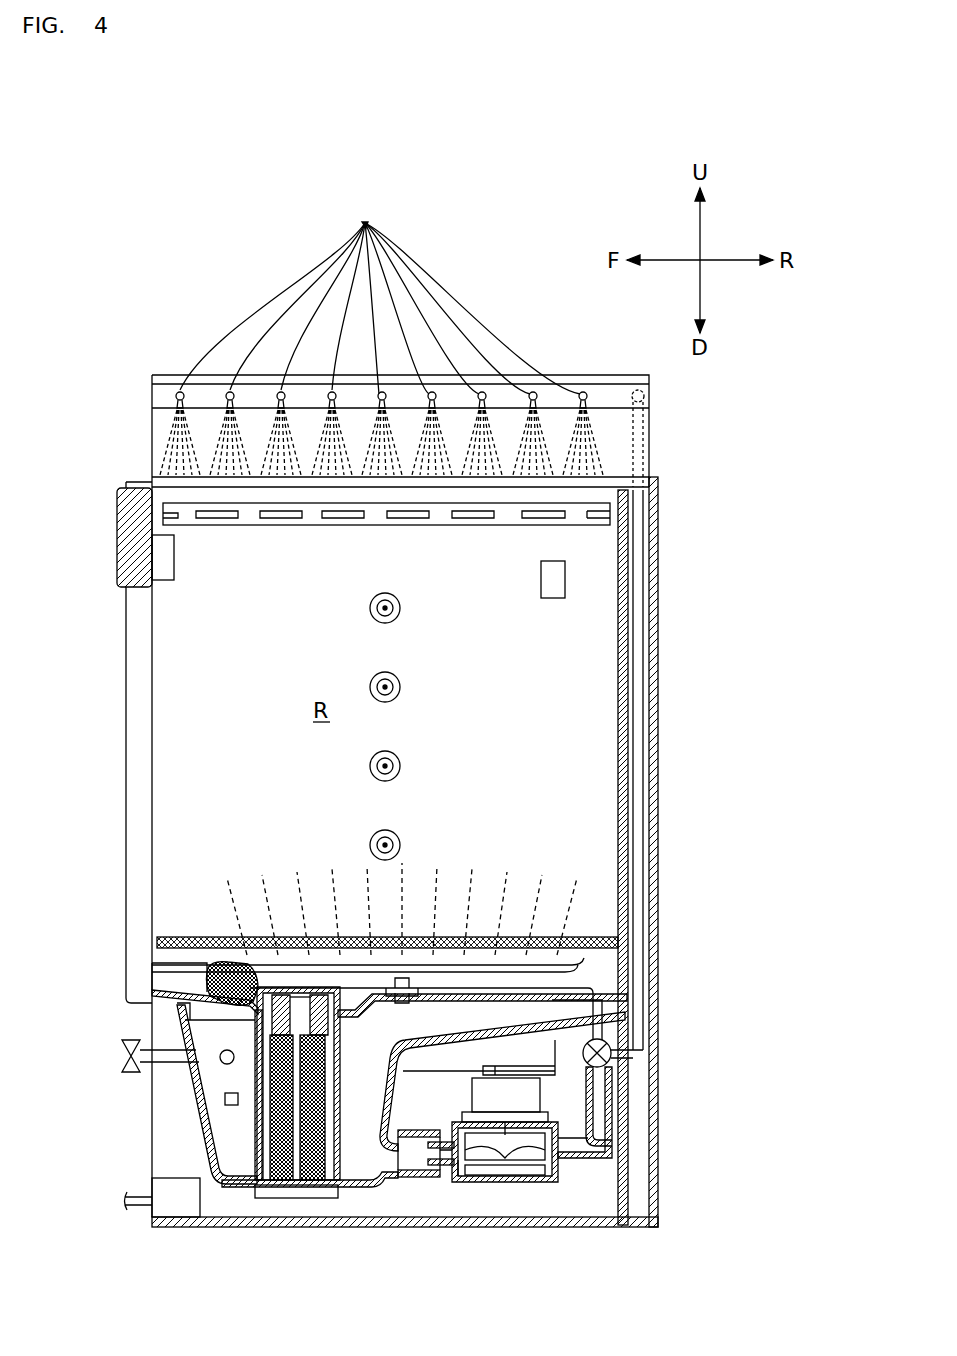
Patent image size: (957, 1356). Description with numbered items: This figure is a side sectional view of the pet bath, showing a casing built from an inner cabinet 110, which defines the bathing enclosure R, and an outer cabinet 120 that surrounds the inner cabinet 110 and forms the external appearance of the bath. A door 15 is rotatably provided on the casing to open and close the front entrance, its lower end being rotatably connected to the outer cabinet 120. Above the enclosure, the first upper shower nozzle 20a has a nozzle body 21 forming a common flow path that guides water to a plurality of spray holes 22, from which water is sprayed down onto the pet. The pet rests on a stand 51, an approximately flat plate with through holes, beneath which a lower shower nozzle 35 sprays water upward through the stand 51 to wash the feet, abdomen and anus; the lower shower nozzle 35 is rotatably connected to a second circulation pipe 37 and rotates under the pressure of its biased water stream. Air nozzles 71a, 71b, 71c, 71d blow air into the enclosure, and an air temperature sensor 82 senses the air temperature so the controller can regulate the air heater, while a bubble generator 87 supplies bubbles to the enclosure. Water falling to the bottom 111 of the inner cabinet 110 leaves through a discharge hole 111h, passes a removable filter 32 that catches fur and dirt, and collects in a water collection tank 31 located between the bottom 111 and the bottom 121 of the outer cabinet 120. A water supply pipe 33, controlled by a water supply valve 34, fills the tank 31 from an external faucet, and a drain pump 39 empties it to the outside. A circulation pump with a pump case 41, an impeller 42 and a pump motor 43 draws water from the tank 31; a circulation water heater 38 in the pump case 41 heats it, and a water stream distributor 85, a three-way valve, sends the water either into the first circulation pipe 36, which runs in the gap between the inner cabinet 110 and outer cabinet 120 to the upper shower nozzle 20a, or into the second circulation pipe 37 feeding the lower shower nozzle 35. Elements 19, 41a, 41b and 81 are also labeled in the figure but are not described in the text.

The door 15 is at (140, 668).
The filter tray 19 is at (170, 520).
The first upper shower nozzle 20a is at (160, 392).
The nozzle body 21 is at (160, 398).
The spray holes 22 is at (381, 335).
The water collection tank 31 is at (220, 1125).
The filter 32 is at (318, 1170).
The water supply pipe 33 is at (128, 1052).
The water supply valve 34 is at (130, 1068).
The lower shower nozzle 35 is at (584, 960).
The first circulation pipe 36 is at (640, 828).
The second circulation pipe 37 is at (608, 992).
The circulation water heater 38 is at (482, 1176).
The drain pump 39 is at (178, 1200).
The pump case 41 is at (600, 1190).
The pump base plate 41a is at (450, 1175).
The pump motor 41b is at (540, 1095).
The impeller 42 is at (548, 1168).
The pump motor 43 is at (600, 1103).
The stand 51 is at (180, 937).
The air nozzle 71a is at (392, 606).
The air nozzle 71b is at (392, 685).
The air nozzle 71c is at (392, 764).
The air nozzle 71d is at (392, 843).
The motor 81 is at (232, 1106).
The air temperature sensor 82 is at (553, 577).
The water stream distributor 85 is at (612, 1060).
The bubble generator 87 is at (182, 975).
The inner cabinet 110 is at (625, 748).
The bottom of the inner cabinet 111 is at (640, 1024).
The discharge hole 111h is at (215, 1008).
The outer cabinet 120 is at (655, 708).
The bottom of the outer cabinet 121 is at (530, 1228).